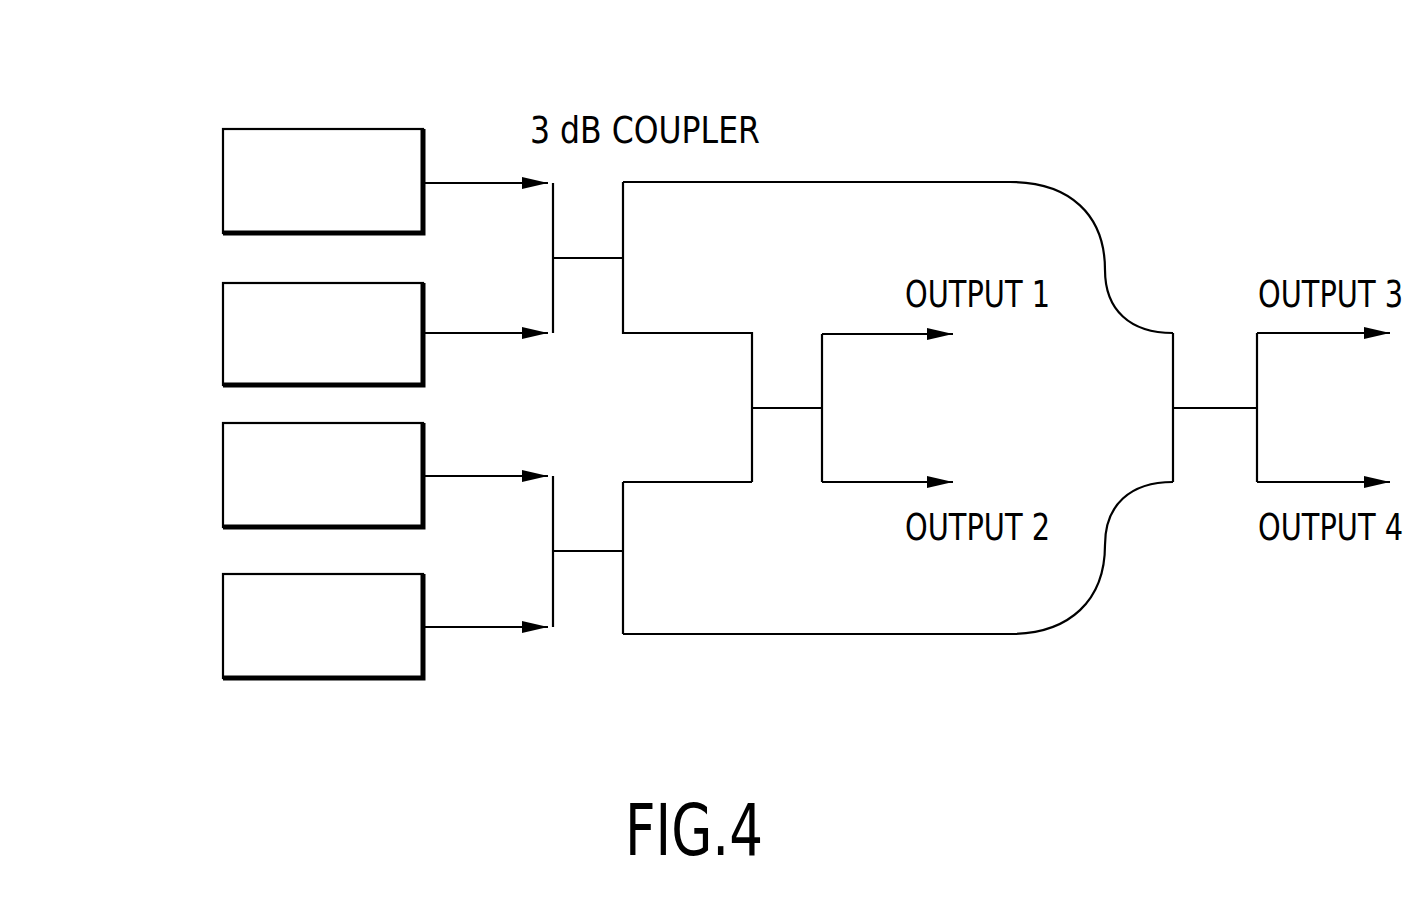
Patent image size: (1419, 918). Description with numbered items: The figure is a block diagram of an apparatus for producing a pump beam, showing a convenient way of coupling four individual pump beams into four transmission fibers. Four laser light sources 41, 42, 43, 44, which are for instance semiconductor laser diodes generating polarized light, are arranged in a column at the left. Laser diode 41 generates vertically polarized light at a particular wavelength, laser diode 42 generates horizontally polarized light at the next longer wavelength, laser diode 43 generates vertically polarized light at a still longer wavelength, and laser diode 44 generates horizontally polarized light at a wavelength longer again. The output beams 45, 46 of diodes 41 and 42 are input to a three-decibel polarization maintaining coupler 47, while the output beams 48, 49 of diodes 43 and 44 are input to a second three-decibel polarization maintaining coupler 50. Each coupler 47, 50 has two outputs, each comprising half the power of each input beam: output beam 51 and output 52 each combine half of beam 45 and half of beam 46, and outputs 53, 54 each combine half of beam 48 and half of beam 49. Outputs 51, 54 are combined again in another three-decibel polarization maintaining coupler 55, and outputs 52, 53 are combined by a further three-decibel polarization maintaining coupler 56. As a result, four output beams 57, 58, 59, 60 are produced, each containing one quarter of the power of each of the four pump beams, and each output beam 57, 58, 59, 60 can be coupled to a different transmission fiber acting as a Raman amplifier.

The laser light source 41 is at (278, 130).
The laser light source 42 is at (223, 327).
The laser light source 43 is at (223, 480).
The laser light source 44 is at (223, 630).
The output beam 45 is at (455, 183).
The output beam 46 is at (455, 333).
The 3 dB polarization maintaining coupler 47 is at (578, 258).
The output beam 48 is at (455, 476).
The output beam 49 is at (455, 627).
The second 3 dB polarization maintaining coupler 50 is at (580, 551).
The output beam 51 is at (765, 182).
The output 52 is at (680, 333).
The output 53 is at (686, 482).
The output 54 is at (688, 634).
The 3 dB polarization maintaining coupler 55 is at (1212, 408).
The 3 dB polarization maintaining coupler 56 is at (782, 408).
The output beam 57 is at (859, 334).
The output beam 58 is at (845, 482).
The output beam 59 is at (1302, 334).
The output beam 60 is at (1288, 482).